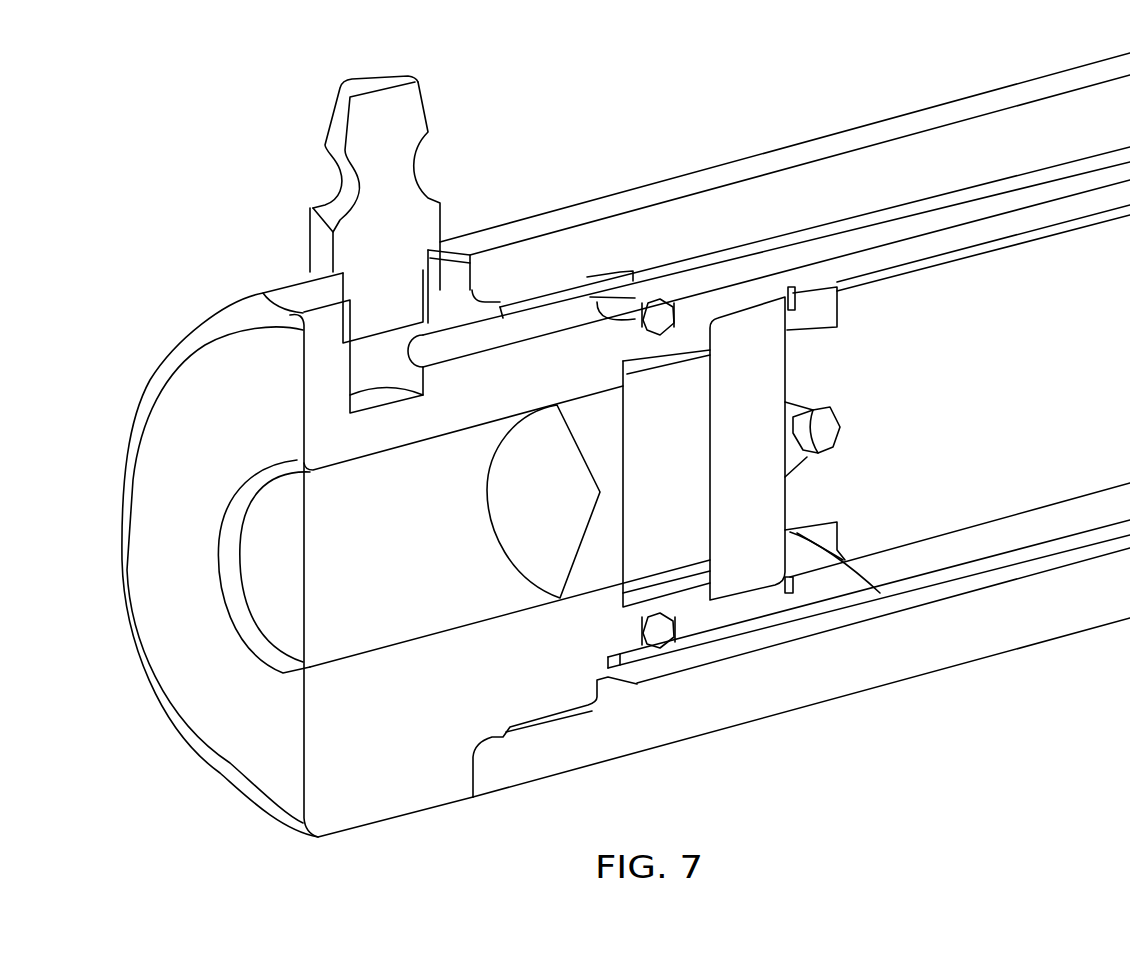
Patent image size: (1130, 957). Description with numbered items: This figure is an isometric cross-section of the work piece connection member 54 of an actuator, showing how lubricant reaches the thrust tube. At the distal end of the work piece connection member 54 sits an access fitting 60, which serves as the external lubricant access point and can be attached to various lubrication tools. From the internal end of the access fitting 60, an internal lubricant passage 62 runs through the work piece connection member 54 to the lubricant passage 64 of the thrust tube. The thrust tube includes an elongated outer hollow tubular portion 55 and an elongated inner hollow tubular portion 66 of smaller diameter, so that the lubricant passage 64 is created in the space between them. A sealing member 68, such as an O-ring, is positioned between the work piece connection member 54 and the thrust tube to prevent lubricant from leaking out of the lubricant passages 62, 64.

The work piece connection member 54 is at (358, 828).
The outer hollow tubular portion 55 is at (782, 168).
The access fitting 60 is at (430, 116).
The internal lubricant passage 62 is at (448, 330).
The lubricant passage 64 is at (657, 275).
The inner hollow tubular portion 66 is at (870, 230).
The sealing member 68 is at (667, 642).